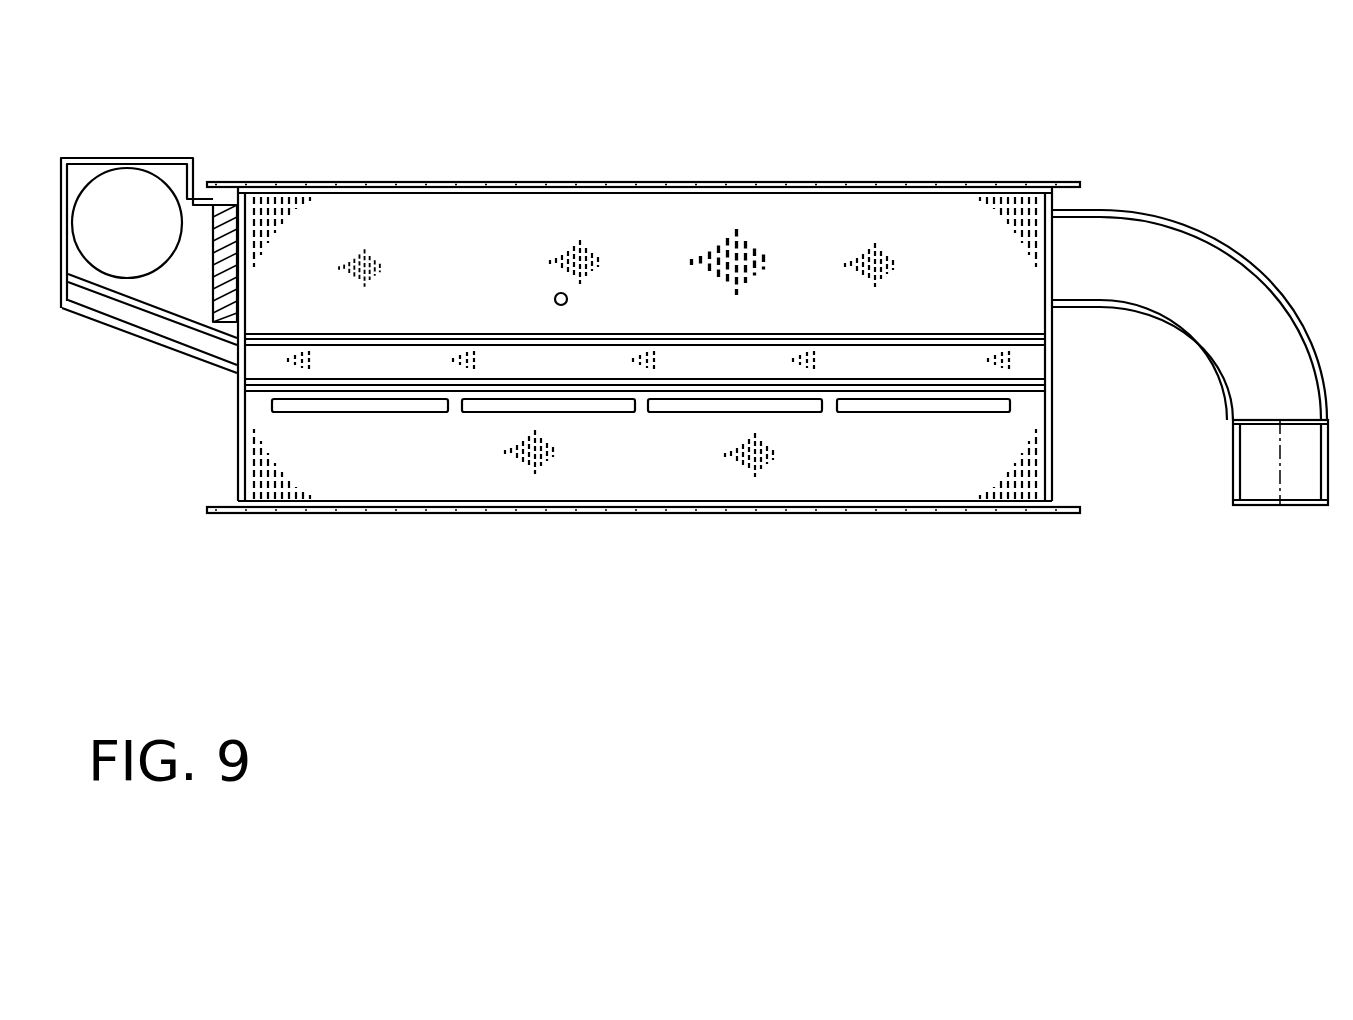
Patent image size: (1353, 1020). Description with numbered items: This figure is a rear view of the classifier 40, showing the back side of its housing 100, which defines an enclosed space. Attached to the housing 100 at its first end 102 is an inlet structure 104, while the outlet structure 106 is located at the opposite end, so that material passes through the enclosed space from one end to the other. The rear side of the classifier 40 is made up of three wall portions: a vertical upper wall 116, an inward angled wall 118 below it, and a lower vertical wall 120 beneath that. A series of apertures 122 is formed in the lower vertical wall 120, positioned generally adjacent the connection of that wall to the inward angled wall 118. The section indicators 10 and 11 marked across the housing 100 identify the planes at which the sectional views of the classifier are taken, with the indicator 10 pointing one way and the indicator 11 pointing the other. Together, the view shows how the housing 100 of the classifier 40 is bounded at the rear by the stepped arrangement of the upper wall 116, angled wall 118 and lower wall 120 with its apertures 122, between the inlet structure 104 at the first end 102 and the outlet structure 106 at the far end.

The classifier 40 is at (888, 175).
The housing 100 is at (487, 285).
The first end 102 is at (1045, 366).
The inlet structure 104 is at (1265, 360).
The outlet structure 106 is at (142, 167).
The vertical upper wall 116 is at (937, 252).
The inward angled wall 118 is at (980, 362).
The lower vertical wall 120 is at (945, 470).
The apertures 122 is at (350, 411).
The section line 10- 10 is at (658, 177).
The section line 11- 11 is at (706, 177).